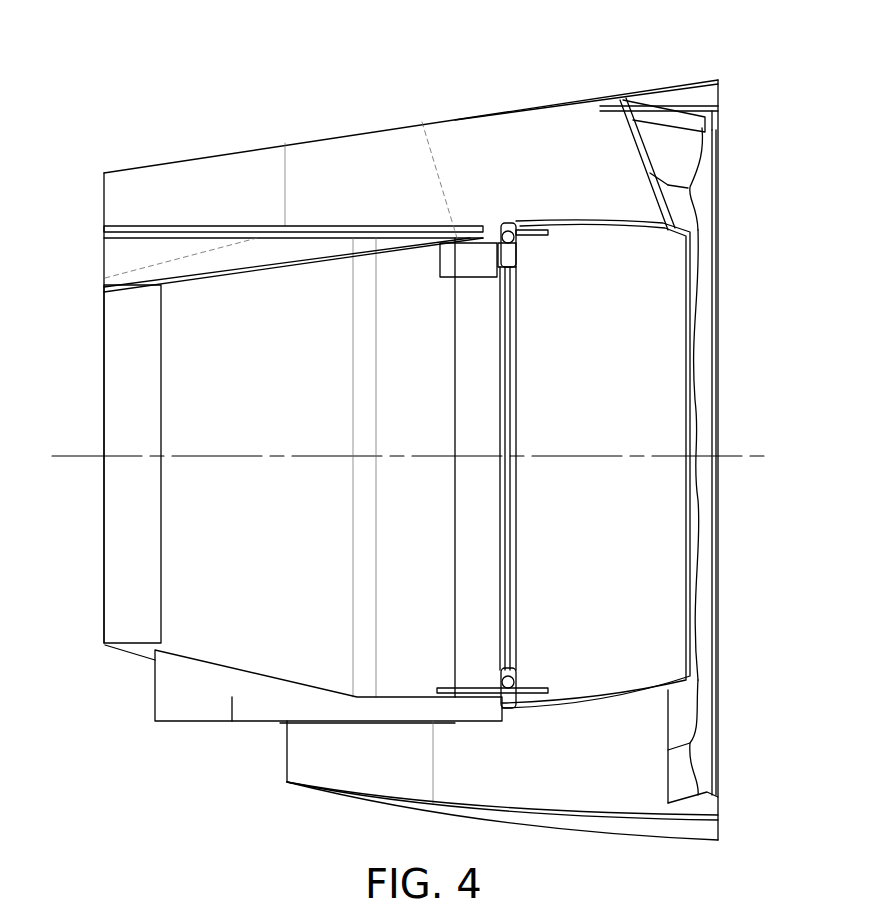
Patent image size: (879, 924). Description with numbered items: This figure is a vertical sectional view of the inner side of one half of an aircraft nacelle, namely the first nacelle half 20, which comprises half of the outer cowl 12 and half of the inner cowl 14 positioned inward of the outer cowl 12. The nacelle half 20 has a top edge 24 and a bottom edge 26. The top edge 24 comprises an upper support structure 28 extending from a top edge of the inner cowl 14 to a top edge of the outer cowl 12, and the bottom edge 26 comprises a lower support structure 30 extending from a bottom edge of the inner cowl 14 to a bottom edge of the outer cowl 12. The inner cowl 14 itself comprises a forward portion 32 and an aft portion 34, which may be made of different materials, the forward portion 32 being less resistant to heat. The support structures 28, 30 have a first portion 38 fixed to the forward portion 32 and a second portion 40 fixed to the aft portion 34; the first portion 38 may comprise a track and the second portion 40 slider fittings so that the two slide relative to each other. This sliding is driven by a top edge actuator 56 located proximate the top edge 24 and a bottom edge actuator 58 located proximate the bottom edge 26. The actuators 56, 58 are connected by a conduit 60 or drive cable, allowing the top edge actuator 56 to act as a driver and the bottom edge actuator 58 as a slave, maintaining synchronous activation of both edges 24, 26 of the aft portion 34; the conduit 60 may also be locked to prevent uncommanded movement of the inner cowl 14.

The outer cowl 12 is at (718, 167).
The inner cowl 14 is at (326, 298).
The first nacelle half 20 is at (86, 80).
The top edge 24 is at (194, 364).
The bottom edge 26 is at (488, 786).
The upper support structure 28 is at (218, 173).
The lower support structure 30 is at (368, 762).
The forward portion 32 is at (624, 373).
The aft portion 34 is at (190, 424).
The first portion 38 is at (547, 130).
The second portion 40 is at (128, 255).
The top edge actuator 56 is at (516, 225).
The bottom edge actuator 58 is at (510, 690).
The conduit 60 is at (512, 568).